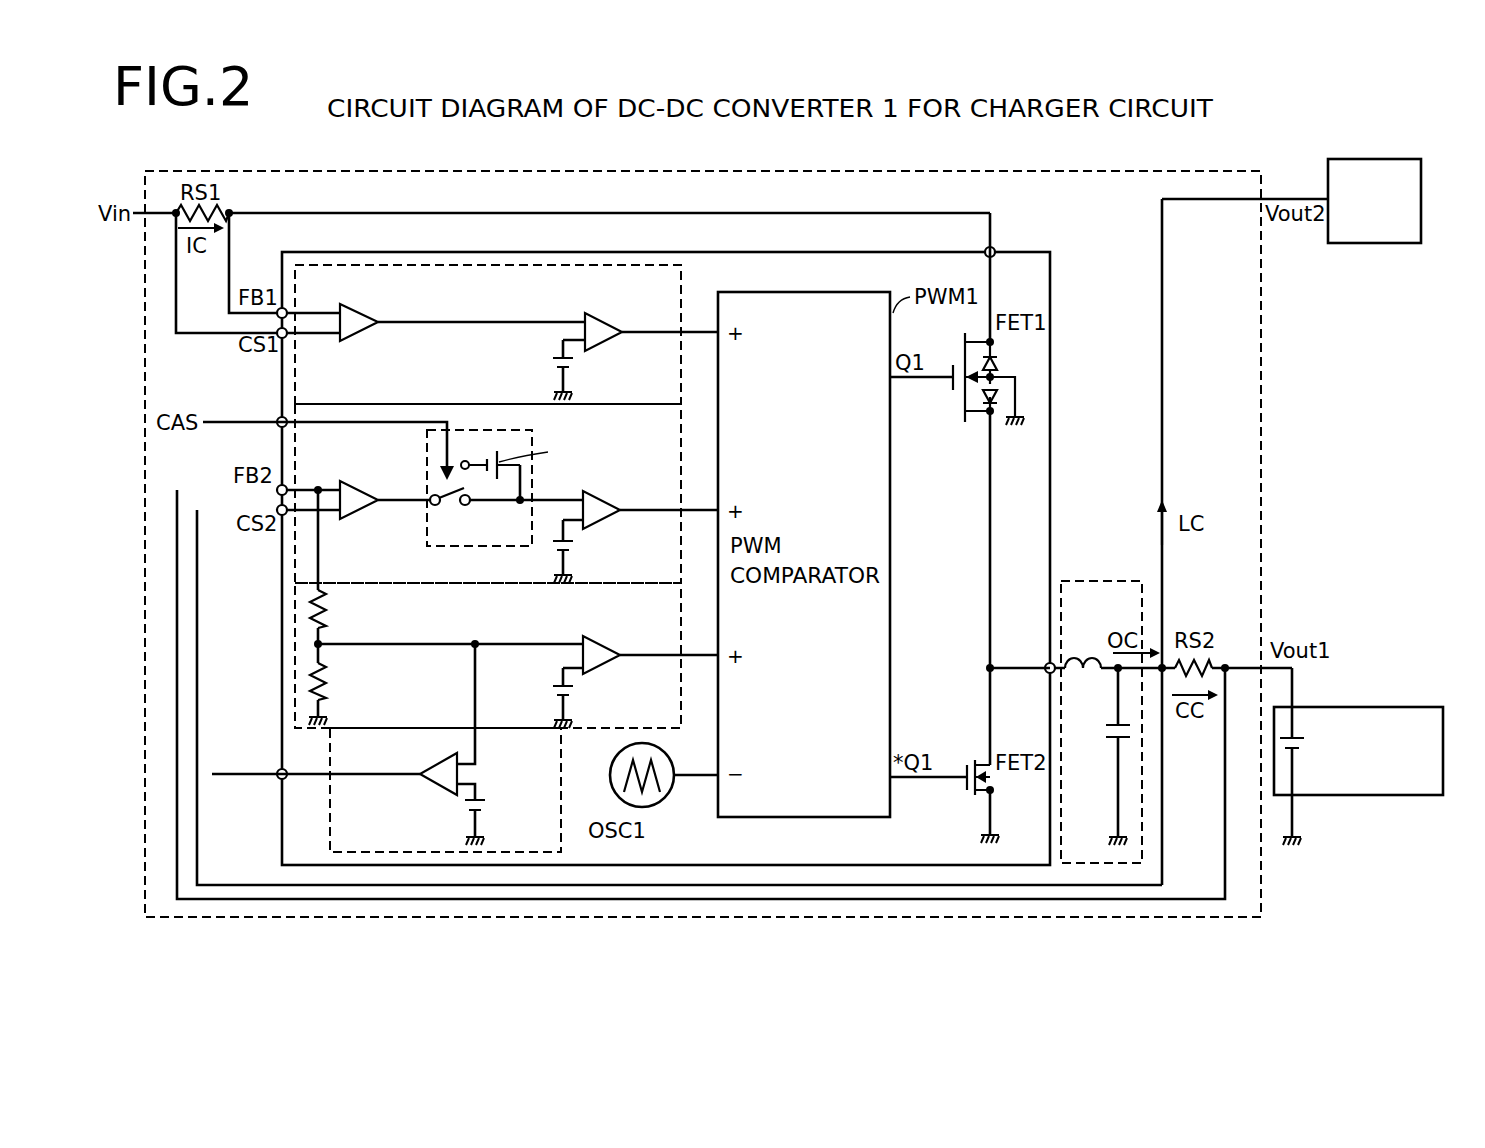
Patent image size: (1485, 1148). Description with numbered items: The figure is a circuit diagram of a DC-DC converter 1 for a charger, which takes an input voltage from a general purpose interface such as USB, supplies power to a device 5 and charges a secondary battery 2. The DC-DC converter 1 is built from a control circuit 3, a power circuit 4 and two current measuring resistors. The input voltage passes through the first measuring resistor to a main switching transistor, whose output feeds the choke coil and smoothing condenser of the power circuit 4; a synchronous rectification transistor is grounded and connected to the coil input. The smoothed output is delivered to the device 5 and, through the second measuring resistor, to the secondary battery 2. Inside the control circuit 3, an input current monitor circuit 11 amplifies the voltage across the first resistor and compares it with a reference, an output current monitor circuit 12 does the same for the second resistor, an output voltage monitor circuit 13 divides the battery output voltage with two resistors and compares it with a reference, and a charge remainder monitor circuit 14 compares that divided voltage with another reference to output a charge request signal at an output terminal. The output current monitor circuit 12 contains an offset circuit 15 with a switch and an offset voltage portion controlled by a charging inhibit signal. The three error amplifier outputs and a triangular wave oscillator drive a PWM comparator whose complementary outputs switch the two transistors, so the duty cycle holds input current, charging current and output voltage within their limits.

The DC-DC converter 1 is at (1262, 410).
The secondary battery 2 is at (1433, 707).
The control circuit 3 is at (878, 252).
The power circuit 4 is at (1085, 581).
The device 5 is at (1358, 158).
The input current monitor circuit 11 is at (683, 292).
The output current monitor circuit 12 is at (510, 493).
The output voltage monitor circuit 13 is at (683, 634).
The charge remainder monitor circuit 14 is at (561, 792).
The offset circuit 15 is at (533, 443).